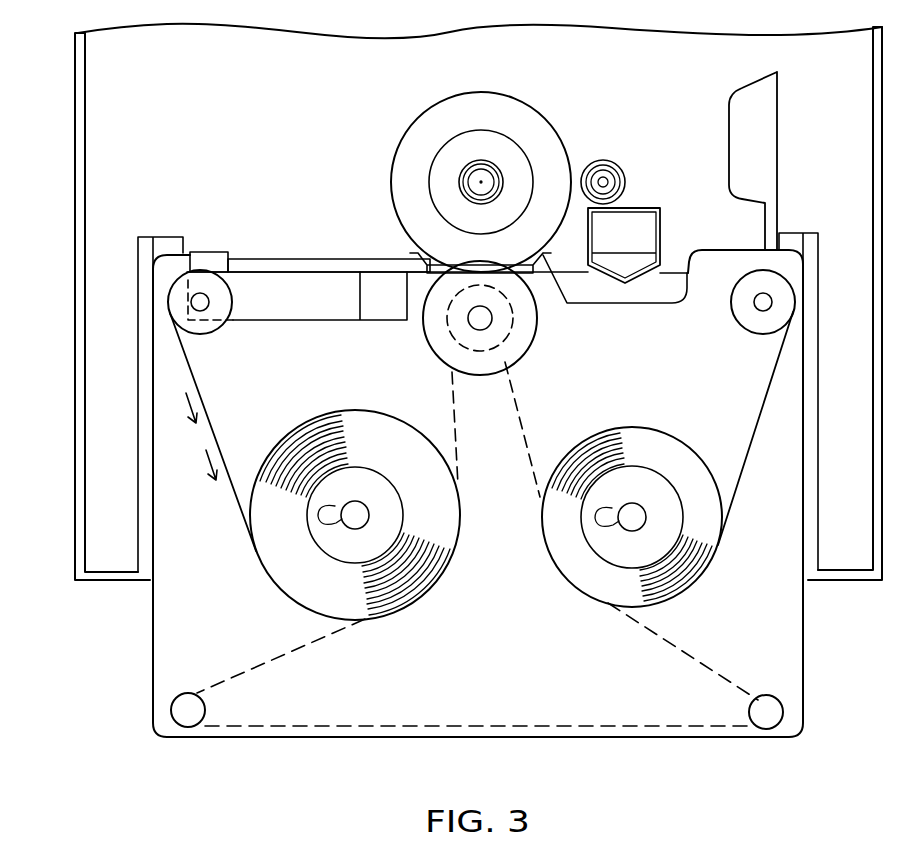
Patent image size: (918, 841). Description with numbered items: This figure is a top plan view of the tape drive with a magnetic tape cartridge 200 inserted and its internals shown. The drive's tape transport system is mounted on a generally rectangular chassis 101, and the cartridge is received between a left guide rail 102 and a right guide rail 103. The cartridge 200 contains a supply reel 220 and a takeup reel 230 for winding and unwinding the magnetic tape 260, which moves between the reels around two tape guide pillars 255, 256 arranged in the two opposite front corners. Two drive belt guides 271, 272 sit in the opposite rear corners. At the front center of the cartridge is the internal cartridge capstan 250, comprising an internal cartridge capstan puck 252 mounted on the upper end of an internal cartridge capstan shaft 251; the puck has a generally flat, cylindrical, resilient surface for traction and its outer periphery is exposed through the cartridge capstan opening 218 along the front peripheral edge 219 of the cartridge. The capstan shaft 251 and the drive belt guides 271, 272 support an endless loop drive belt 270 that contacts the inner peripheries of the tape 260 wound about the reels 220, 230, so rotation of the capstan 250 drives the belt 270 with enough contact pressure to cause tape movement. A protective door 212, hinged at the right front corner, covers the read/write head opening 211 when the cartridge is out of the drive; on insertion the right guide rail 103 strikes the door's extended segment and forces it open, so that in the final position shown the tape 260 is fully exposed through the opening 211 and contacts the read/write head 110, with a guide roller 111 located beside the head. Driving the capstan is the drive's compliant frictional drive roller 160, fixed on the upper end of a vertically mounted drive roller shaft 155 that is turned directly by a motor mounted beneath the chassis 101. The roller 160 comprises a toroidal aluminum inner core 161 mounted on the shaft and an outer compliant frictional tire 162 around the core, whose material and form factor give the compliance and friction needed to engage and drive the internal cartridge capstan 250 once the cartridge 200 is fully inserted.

The chassis 101 is at (92, 98).
The left guide bracket 102 is at (148, 335).
The right guide rail 103 is at (815, 324).
The read/write head 110 is at (636, 238).
The guide roller 111 is at (605, 170).
The drive roller shaft 155 is at (468, 180).
The compliant frictional drive roller 160 is at (467, 158).
The inner core 161 is at (450, 147).
The outer compliant frictional tire 162 is at (472, 105).
The magnetic tape cartridge 200 is at (805, 630).
The read/write head opening 211 is at (650, 288).
The protective door 212 is at (742, 108).
The cartridge capstan opening 218 is at (436, 267).
The front peripheral edge 219 is at (282, 253).
The supply reel 220 is at (355, 515).
The takeup reel 230 is at (632, 517).
The internal cartridge capstan 250 is at (495, 318).
The internal cartridge capstan shaft 251 is at (470, 322).
The internal cartridge capstan puck 252 is at (538, 318).
The tape guide pillar 255 is at (224, 323).
The tape guide pillar 256 is at (758, 306).
The magnetic tape 260 is at (213, 425).
The endless loop drive belt 270 is at (493, 728).
The drive belt guide 271 is at (183, 708).
The drive belt guide 272 is at (770, 705).